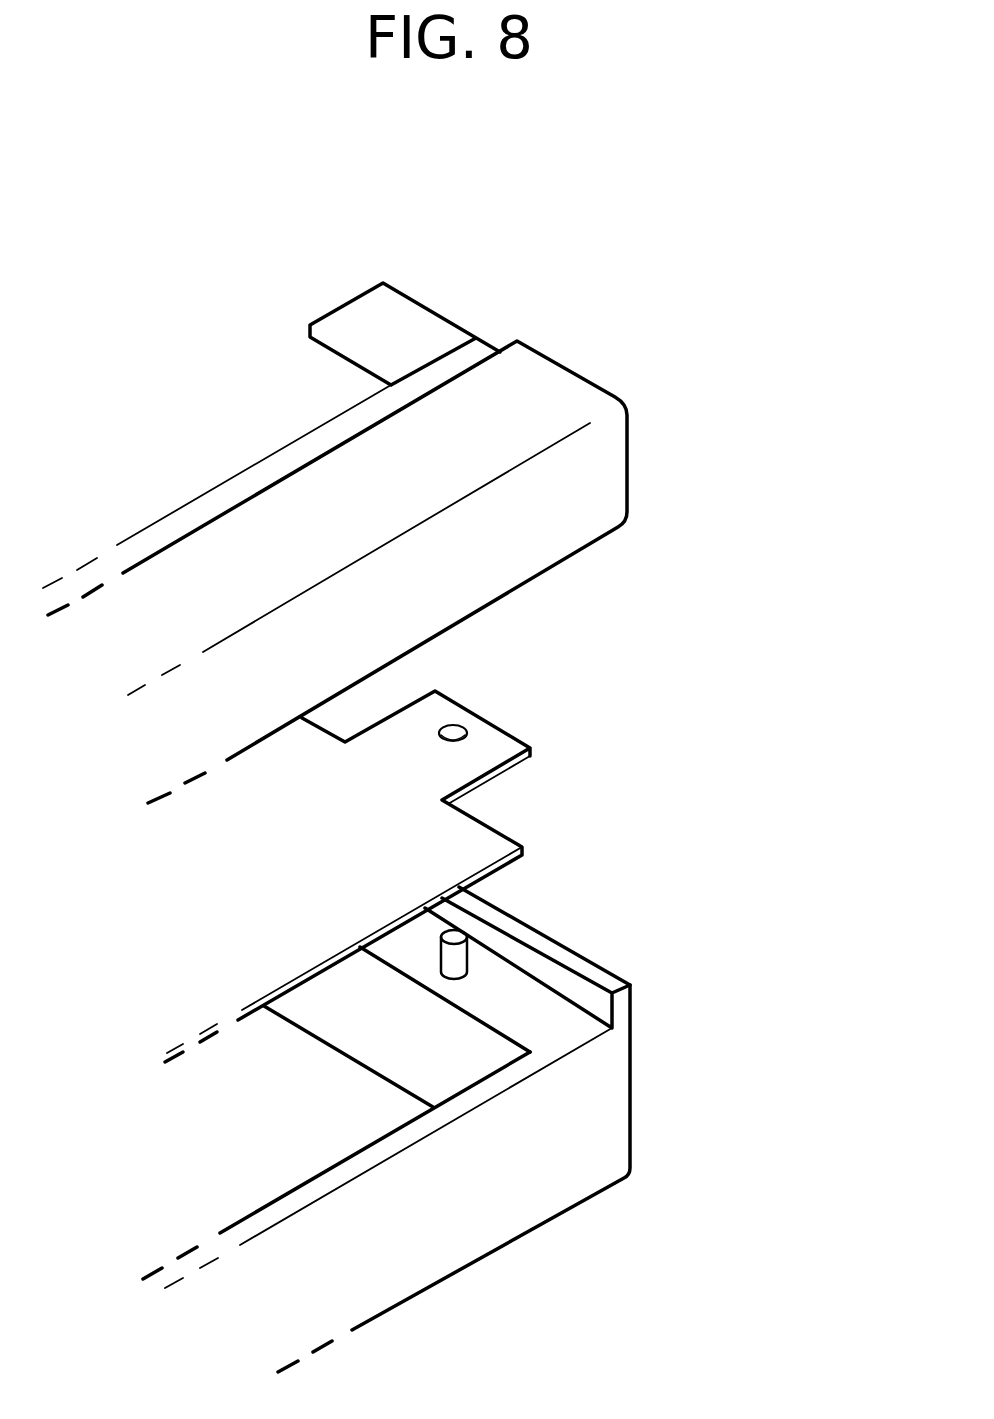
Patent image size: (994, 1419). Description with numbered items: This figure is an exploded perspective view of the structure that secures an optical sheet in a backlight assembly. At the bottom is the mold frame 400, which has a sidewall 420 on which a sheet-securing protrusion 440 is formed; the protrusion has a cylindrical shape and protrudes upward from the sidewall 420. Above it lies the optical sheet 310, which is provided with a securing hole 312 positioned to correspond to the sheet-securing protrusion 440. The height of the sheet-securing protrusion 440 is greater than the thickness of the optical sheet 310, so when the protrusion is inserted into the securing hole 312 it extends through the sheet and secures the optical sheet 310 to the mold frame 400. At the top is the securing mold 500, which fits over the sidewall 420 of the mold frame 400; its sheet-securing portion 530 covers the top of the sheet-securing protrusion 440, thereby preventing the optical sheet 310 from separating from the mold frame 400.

The securing mold 500 is at (583, 362).
The sheet-securing portion 530 is at (405, 318).
The optical sheet 310 is at (520, 811).
The securing hole 312 is at (458, 726).
The mold frame 400 is at (645, 1097).
The sidewall 420 is at (528, 1008).
The sheet-securing protrusion 440 is at (458, 935).